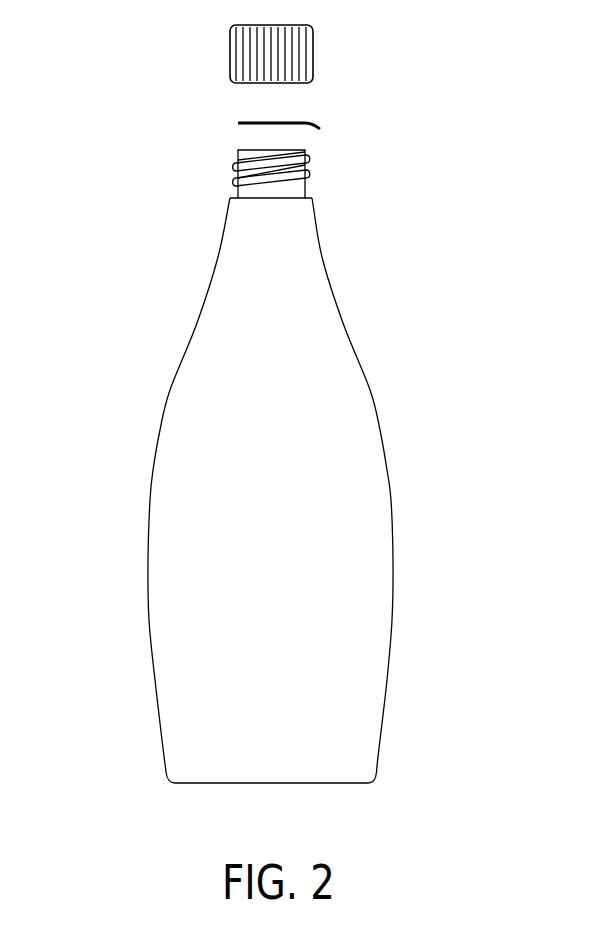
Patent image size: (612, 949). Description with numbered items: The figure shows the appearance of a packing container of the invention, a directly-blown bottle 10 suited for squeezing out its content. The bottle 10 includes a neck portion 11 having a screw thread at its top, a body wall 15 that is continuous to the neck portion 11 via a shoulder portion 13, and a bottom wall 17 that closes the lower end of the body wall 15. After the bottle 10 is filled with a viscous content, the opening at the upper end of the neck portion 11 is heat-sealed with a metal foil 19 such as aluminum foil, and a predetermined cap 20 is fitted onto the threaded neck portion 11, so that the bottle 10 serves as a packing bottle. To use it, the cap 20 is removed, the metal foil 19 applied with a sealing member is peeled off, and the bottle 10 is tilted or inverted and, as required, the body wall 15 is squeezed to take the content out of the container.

The directly-blown bottle 10 is at (118, 434).
The neck portion 11 is at (326, 176).
The shoulder portion 13 is at (365, 330).
The body wall 15 is at (374, 520).
The bottom wall 17 is at (344, 784).
The metal foil 19 is at (238, 122).
The cap 20 is at (303, 58).